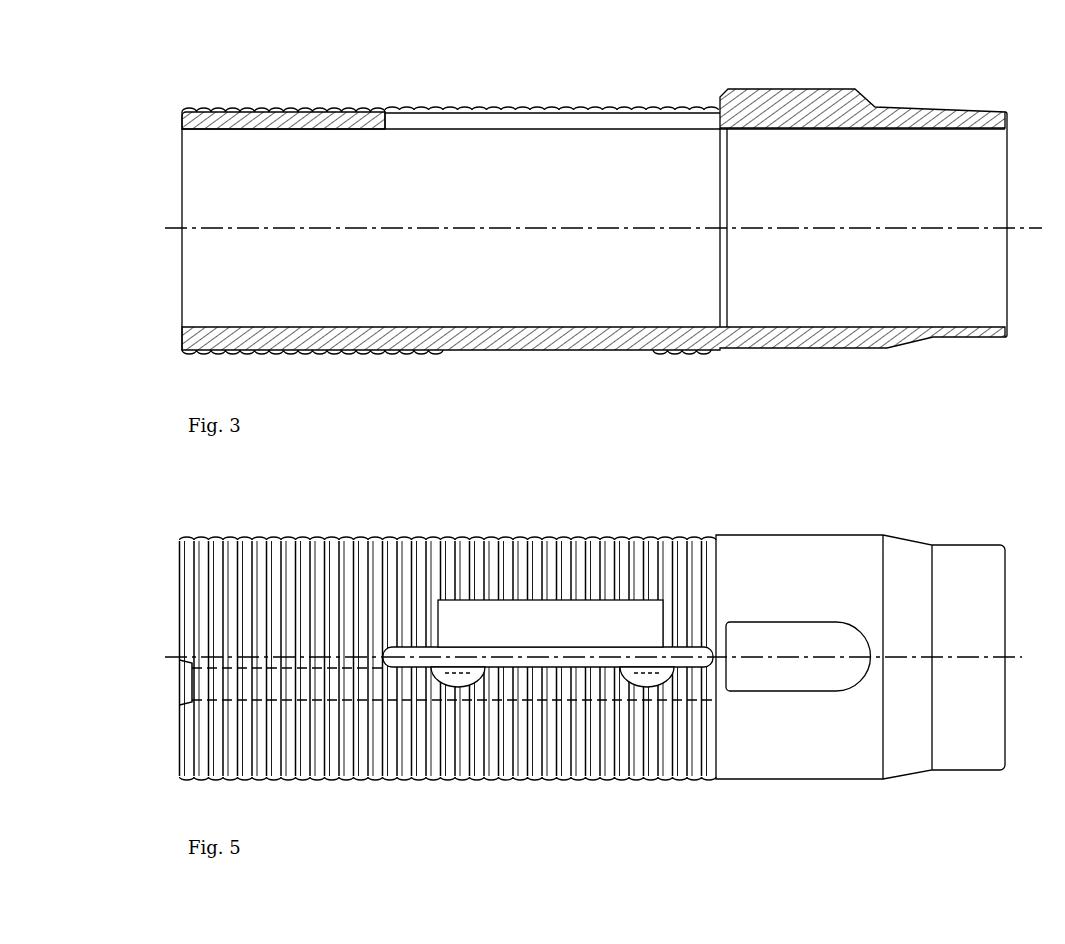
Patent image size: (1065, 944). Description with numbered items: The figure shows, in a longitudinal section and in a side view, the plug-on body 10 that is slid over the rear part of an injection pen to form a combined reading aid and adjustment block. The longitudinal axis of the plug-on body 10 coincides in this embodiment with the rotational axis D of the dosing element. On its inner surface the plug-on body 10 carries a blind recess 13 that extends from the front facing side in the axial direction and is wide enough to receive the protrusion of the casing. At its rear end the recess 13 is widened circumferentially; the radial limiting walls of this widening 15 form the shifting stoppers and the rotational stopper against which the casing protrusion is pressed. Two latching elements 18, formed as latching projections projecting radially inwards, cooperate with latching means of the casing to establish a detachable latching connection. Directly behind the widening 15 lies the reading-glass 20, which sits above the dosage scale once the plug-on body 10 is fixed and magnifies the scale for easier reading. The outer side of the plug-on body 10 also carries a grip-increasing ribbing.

In FIG. 3, the plug-on body 10 is at (980, 368).
In FIG. 5, the plug-on body 10 is at (1001, 511).
In FIG. 5, the recess 13 is at (176, 690).
In FIG. 3, the widening 15 is at (446, 118).
In FIG. 5, the widening 15 is at (510, 663).
In FIG. 5, the latching elements 18 is at (463, 677).
In FIG. 3, the reading-glass 20 is at (812, 88).
In FIG. 5, the reading-glass 20 is at (792, 670).
In FIG. 3, the rotational axis D is at (1030, 223).